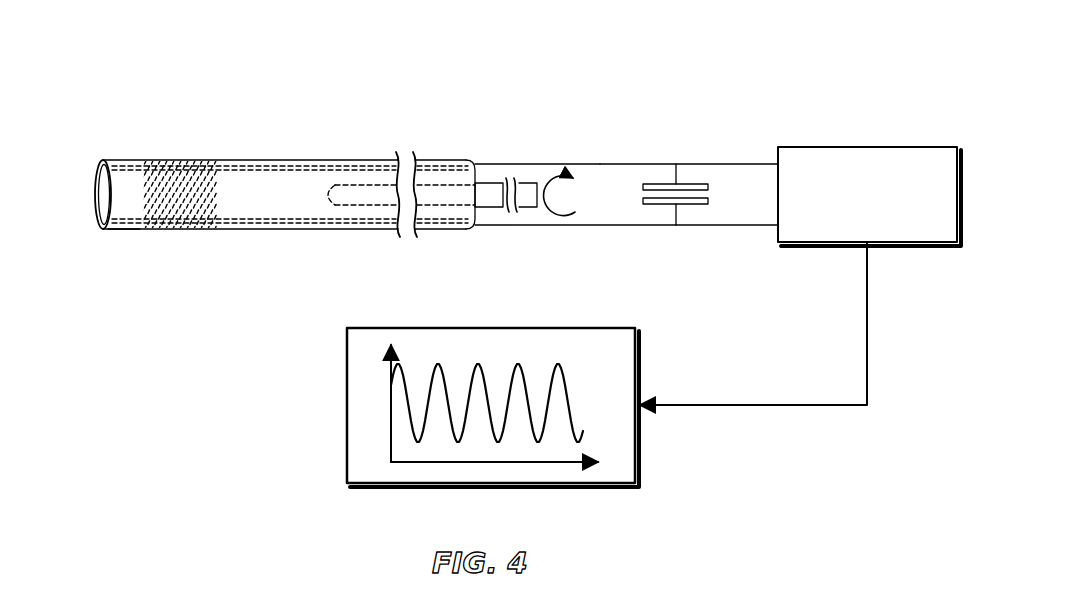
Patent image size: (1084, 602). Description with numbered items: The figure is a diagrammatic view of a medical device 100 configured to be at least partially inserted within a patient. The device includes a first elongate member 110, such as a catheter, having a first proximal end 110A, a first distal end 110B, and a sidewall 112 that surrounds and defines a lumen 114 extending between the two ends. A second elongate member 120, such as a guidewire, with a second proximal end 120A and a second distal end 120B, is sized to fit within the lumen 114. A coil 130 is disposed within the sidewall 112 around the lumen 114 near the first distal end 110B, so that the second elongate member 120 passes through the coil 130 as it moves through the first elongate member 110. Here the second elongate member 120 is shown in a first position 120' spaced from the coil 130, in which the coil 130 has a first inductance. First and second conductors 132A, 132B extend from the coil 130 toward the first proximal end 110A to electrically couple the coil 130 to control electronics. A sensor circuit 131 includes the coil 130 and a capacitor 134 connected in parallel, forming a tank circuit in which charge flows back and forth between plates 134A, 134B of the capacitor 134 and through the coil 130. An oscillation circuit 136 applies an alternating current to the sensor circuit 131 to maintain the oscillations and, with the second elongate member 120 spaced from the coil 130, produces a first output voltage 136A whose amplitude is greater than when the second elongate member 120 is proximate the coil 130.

The medical device 100 is at (734, 52).
The first elongate member 110 is at (293, 160).
The first proximal end 110A is at (478, 171).
The first distal end 110B is at (100, 163).
The sidewall 112 is at (126, 227).
The lumen 114 is at (107, 195).
The second elongate member 120 is at (420, 187).
The first position 120' is at (440, 146).
The second proximal end 120A is at (537, 201).
The second distal end 120B is at (332, 192).
The coil 130 is at (197, 160).
The sensor circuit 131 is at (565, 164).
The first conductor 132A is at (613, 165).
The second conductor 132B is at (618, 226).
The capacitor 134 is at (693, 195).
The first capacitor plate 134A is at (665, 182).
The second capacitor plate 134B is at (690, 207).
The oscillation circuit 136 is at (867, 147).
The first output voltage 136A is at (441, 328).